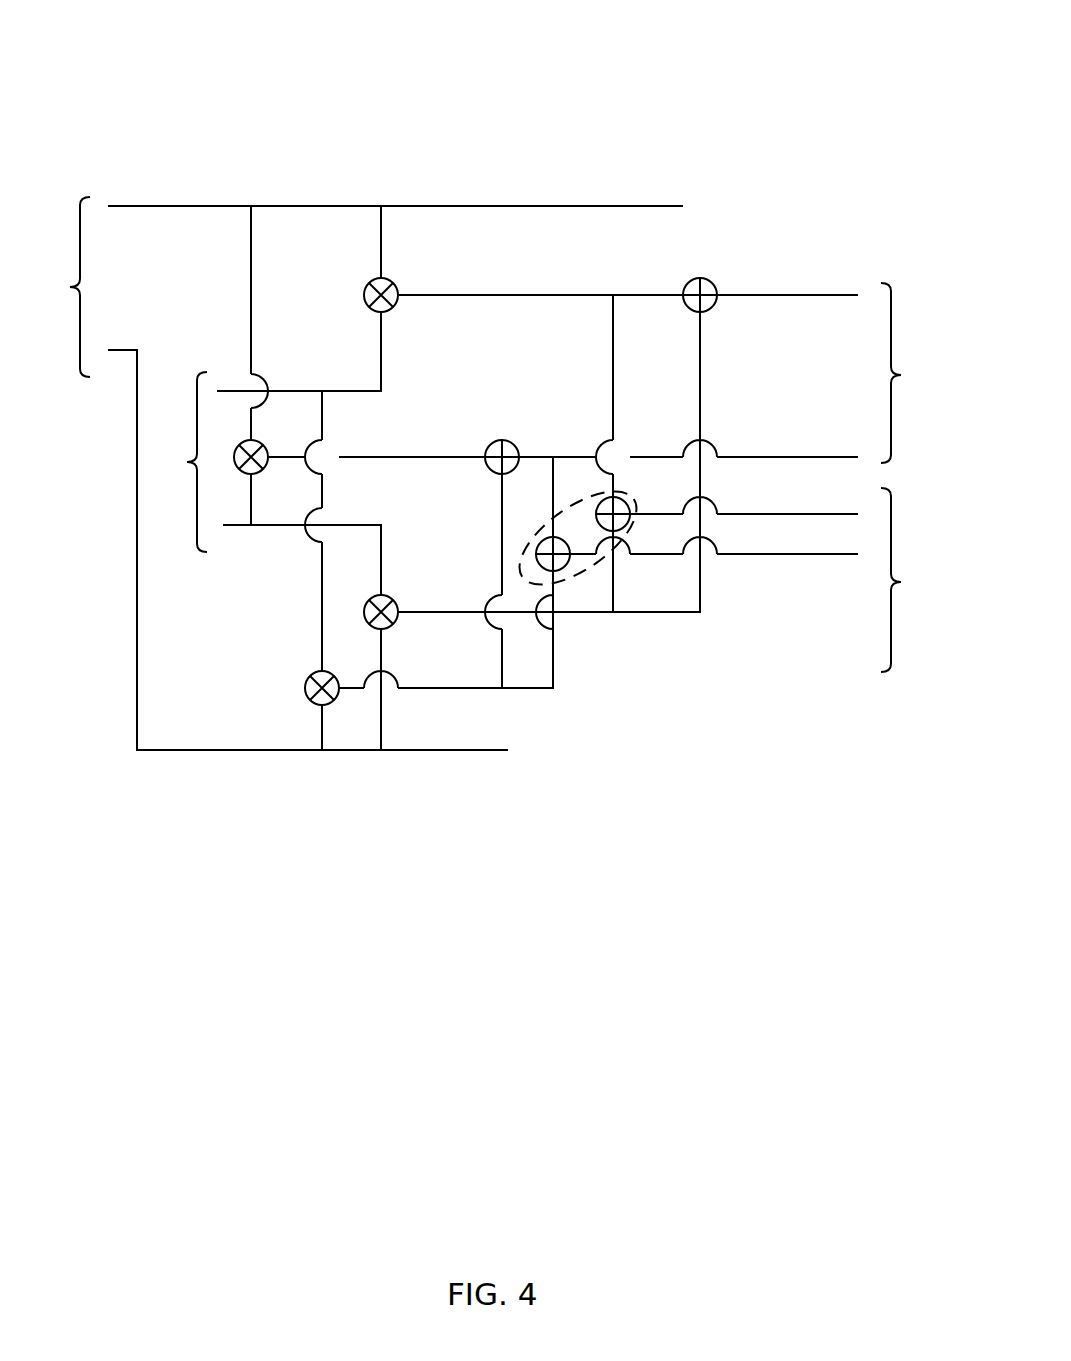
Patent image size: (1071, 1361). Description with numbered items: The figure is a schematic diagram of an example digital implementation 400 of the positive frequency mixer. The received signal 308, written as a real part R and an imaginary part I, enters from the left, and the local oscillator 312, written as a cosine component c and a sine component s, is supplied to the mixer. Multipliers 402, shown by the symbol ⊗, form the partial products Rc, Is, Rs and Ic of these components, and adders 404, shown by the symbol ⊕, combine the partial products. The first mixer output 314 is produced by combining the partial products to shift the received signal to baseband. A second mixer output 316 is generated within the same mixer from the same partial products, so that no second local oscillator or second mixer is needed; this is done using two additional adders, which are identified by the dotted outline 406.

The digital implementation 400 is at (680, 140).
The multiplier 402 is at (396, 307).
The adder 404 is at (705, 302).
The dotted outline 406 is at (593, 572).
The received signal 308 is at (66, 286).
The local oscillator 312 is at (180, 462).
The first mixer output 314 is at (916, 373).
The second mixer output 316 is at (916, 580).